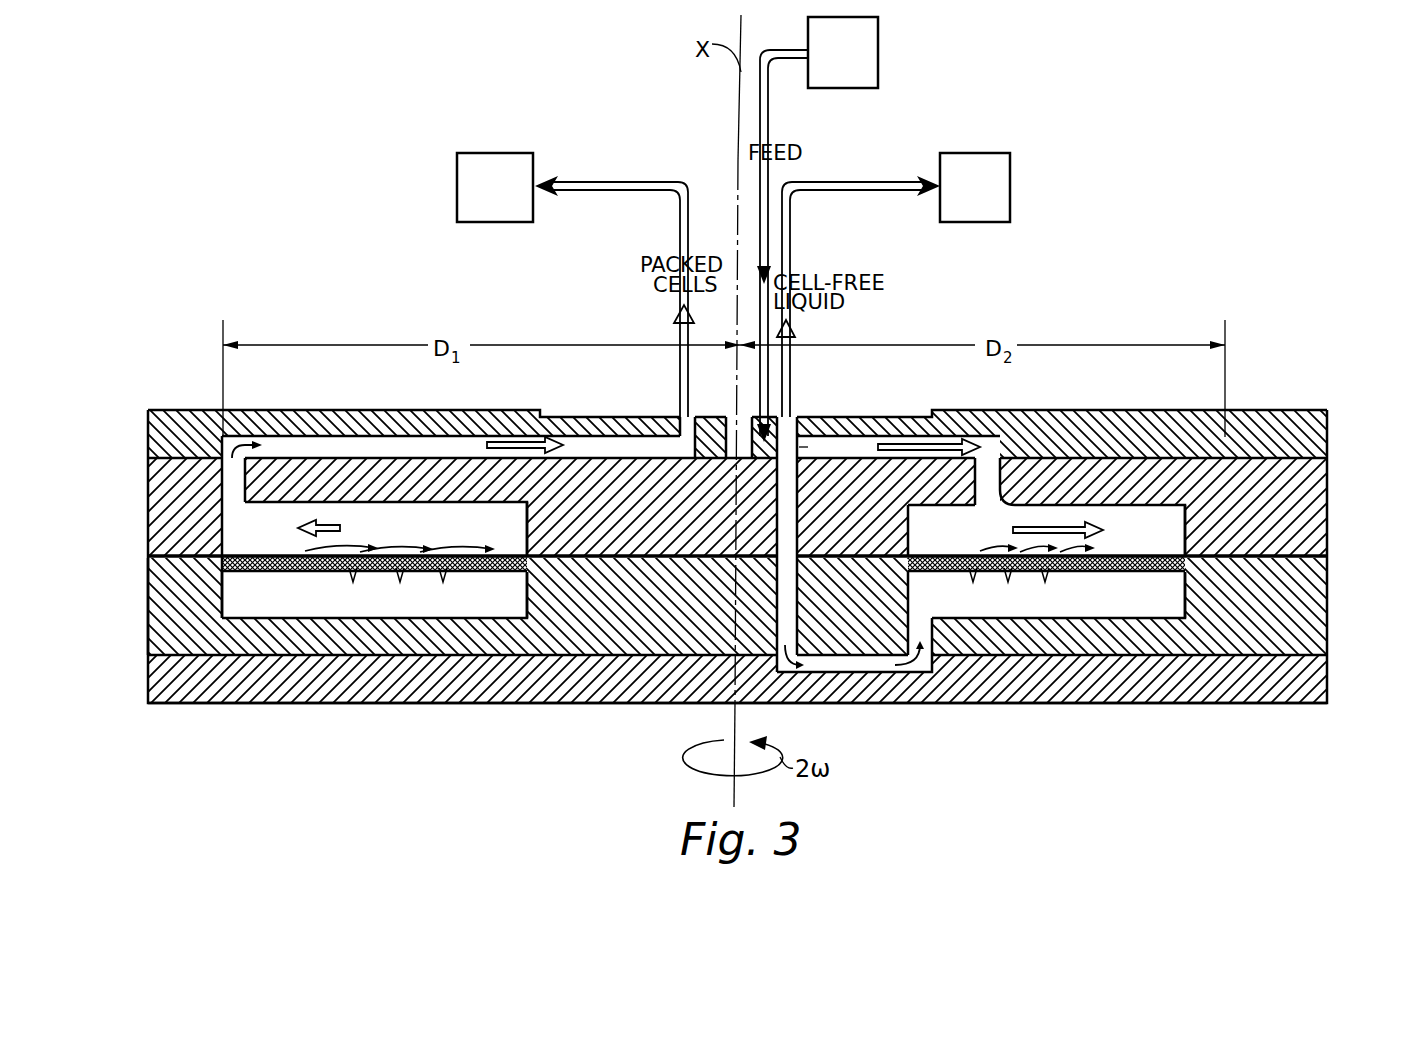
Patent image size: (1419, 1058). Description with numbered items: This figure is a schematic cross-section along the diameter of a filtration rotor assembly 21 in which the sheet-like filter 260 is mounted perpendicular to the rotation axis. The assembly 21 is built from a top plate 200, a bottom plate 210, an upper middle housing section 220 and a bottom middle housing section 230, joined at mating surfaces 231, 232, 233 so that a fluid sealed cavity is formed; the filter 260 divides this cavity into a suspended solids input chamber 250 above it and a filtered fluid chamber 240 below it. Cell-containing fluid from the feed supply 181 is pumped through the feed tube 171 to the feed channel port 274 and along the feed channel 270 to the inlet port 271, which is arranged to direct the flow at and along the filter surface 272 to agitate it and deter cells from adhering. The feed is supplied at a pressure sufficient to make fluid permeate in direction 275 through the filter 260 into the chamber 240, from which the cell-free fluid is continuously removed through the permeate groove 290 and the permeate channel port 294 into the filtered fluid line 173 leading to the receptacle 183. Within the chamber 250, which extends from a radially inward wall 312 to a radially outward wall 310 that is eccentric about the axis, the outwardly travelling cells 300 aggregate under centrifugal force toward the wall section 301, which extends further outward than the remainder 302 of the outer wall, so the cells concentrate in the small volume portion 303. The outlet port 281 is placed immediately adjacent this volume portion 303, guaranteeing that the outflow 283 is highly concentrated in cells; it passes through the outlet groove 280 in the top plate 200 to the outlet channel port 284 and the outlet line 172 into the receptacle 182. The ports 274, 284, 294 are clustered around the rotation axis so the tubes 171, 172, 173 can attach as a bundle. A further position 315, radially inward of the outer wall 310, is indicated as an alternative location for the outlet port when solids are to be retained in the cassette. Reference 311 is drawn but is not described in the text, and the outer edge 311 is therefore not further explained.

The filtration rotor assembly 21 is at (400, 710).
The feed tube 171 is at (797, 24).
The outlet line for concentrated solids 172 is at (640, 182).
The filtered fluid line 173 is at (888, 182).
The feed supply 181 is at (828, 68).
The receptacle for concentrated solids 182 is at (480, 204).
The receptacle for filtered fluid 183 is at (960, 204).
The top plate 200 is at (1268, 410).
The bottom plate 210 is at (1290, 703).
The upper middle housing section 220 is at (1330, 507).
The bottom middle housing section 230 is at (1315, 612).
The mating surface 231 is at (1332, 657).
The mating surface 232 is at (1332, 558).
The mating surface 233 is at (1332, 461).
The filtered fluid chamber 240 is at (500, 609).
The suspended solids input chamber 250 is at (466, 534).
The filter 260 is at (525, 616).
The feed channel 270 is at (900, 436).
The inlet port 271 is at (1013, 412).
The filter surface 272 is at (955, 555).
The feed channel port 274 is at (740, 438).
The permeation direction 275 is at (318, 570).
The outlet groove 280 is at (388, 438).
The outlet port 281 is at (233, 481).
The outflow 283 is at (246, 436).
The outlet channel port 284 is at (678, 436).
The permeate groove 290 is at (803, 672).
The permeate channel port 294 is at (795, 420).
The outward cell travel 300 is at (350, 514).
The outwardly extending wall section 301 is at (228, 503).
The remainder of outer wall 302 is at (1183, 505).
The small volume portion 303 is at (235, 545).
The radially outward chamber wall 310 is at (225, 602).
The outer edge 311 is at (145, 610).
The radially inward wall 312 is at (526, 532).
The radially inward outlet position 315 is at (337, 500).